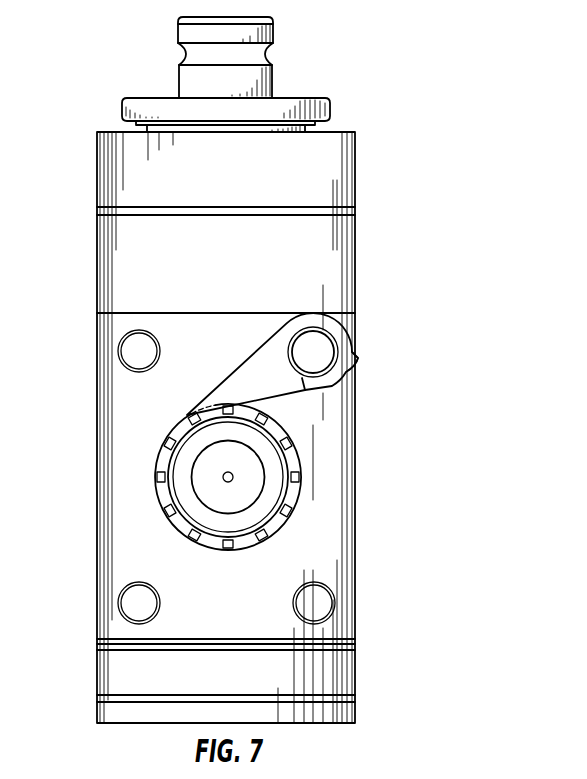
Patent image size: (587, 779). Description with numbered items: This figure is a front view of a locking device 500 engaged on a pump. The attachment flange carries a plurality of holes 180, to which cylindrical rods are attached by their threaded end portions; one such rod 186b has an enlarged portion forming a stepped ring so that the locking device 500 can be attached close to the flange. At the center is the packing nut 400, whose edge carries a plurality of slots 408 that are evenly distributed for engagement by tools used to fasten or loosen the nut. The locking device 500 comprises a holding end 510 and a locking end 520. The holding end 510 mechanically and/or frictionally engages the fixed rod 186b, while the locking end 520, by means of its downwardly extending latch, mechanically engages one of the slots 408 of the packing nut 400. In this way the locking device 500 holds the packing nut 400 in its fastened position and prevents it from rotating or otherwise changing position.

The holes 180 is at (118, 351).
The locking device 500 is at (297, 345).
The holding end 510 is at (341, 324).
The locking end 520 is at (238, 366).
The rod 186b is at (337, 377).
The slots 408 is at (270, 413).
The packing nut 400 is at (286, 486).